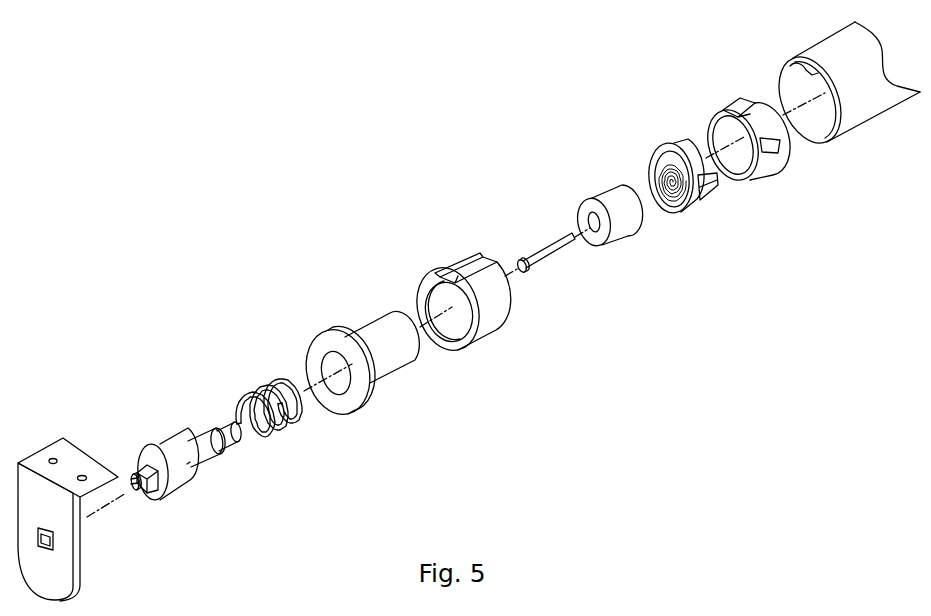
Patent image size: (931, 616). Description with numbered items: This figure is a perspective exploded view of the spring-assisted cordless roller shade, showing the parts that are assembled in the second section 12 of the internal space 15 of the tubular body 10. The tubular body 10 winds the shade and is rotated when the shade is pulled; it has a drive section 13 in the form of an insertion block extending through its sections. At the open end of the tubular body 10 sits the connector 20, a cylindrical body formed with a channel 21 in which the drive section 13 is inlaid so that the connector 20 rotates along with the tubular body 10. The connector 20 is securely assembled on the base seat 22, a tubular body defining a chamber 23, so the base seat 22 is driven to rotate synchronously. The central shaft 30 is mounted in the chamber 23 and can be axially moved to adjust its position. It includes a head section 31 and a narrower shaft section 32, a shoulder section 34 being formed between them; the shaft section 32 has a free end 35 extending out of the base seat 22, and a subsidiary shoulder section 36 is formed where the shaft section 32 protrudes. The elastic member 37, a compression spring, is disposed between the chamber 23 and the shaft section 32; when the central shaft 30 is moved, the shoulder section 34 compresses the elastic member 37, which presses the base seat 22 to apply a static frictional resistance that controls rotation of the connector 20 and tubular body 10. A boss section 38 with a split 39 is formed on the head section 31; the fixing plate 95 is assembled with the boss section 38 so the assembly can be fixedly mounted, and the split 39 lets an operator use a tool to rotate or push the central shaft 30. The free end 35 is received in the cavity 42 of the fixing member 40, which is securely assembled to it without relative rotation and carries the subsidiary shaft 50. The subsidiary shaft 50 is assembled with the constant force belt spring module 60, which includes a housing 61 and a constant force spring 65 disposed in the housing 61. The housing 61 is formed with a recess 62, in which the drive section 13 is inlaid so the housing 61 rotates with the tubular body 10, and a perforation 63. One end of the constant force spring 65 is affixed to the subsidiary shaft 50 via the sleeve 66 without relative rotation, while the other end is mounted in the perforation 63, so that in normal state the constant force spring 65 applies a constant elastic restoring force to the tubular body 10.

The tubular body 10 is at (863, 127).
The second section 12 is at (828, 121).
The drive section 13 is at (810, 75).
The internal space 15 is at (818, 127).
The connector 20 is at (487, 325).
The channel 21 is at (460, 272).
The base seat 22 is at (338, 328).
The chamber 23 is at (340, 398).
The central shaft 30 is at (180, 430).
The head section 31 is at (182, 485).
The shaft section 32 is at (212, 460).
The shoulder section 34 is at (193, 477).
The free end 35 is at (235, 444).
The subsidiary shoulder section 36 is at (218, 435).
The elastic member 37 is at (268, 384).
The boss section 38 is at (149, 496).
The split 39 is at (133, 476).
The fixing member 40 is at (632, 232).
The cavity 42 is at (591, 221).
The subsidiary shaft 50 is at (558, 260).
The constant force belt spring module 60 is at (684, 120).
The housing 61 is at (767, 172).
The recess 62 is at (743, 110).
The perforation 63 is at (763, 148).
The constant force spring 65 is at (672, 146).
The sleeve 66 is at (680, 206).
The fixing plate 95 is at (77, 452).